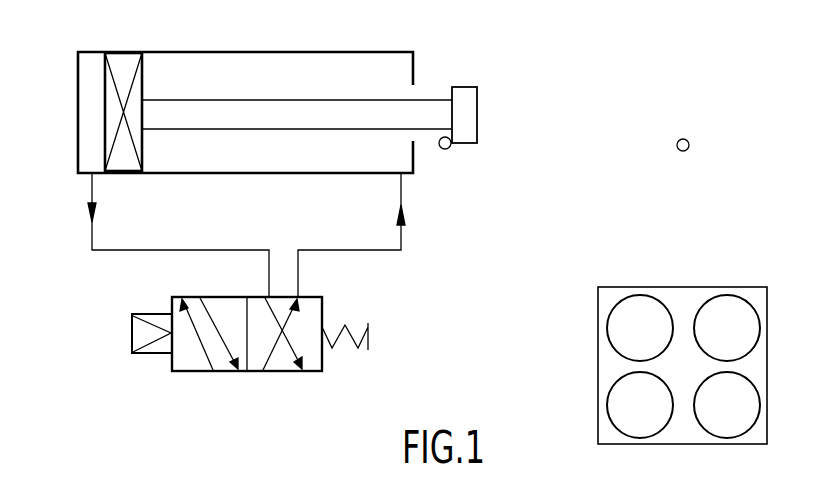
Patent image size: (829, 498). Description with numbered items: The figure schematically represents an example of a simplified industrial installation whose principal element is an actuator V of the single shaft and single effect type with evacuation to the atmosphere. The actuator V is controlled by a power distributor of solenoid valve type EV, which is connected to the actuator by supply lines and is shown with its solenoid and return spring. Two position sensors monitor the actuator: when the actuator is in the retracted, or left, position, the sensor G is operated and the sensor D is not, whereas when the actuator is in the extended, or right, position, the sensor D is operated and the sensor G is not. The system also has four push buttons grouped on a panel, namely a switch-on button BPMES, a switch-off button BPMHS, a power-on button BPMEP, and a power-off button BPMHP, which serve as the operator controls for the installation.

The actuator V is at (235, 52).
The sensor G is at (448, 149).
The sensor D is at (683, 151).
The solenoid valve EV is at (196, 372).
The switch-on button BPMES is at (640, 328).
The power-on button BPMEP is at (727, 328).
The switch-off button BPMHS is at (640, 405).
The power-off button BPMHP is at (727, 405).